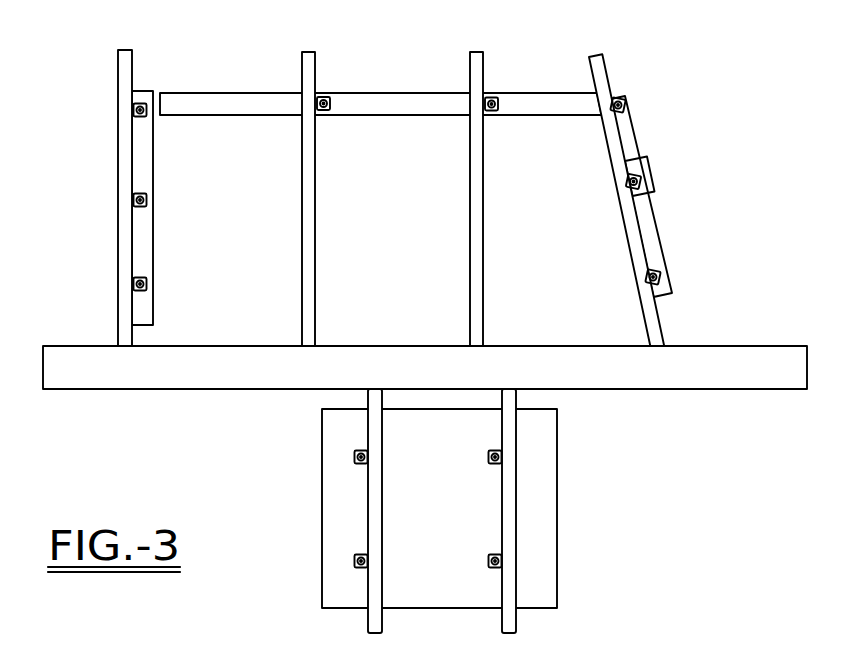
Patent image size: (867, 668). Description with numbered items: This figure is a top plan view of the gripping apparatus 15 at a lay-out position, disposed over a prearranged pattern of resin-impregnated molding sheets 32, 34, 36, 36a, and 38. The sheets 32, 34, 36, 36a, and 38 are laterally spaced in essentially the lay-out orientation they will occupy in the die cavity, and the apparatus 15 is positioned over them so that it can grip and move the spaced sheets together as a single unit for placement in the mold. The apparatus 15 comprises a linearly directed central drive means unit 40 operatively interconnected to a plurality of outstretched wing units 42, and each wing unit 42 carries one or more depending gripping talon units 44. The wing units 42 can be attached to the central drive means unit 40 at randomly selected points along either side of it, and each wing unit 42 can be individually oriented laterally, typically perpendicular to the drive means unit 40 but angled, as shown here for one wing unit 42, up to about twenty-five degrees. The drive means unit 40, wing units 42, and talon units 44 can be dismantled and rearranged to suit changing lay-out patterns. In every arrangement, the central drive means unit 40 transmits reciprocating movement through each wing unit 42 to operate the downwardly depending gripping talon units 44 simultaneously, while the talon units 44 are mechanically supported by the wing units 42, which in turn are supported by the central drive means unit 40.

The gripping apparatus 15 is at (687, 402).
The resin-impregnated sheet 32 is at (407, 100).
The resin-impregnated sheet 34 is at (150, 250).
The resin-impregnated sheet 36 is at (661, 228).
The resin-impregnated sheet 36a is at (633, 137).
The resin-impregnated sheet 38 is at (557, 518).
The central drive means unit 40 is at (595, 385).
The wing unit 42 is at (121, 234).
The gripping talon unit 44 is at (142, 105).